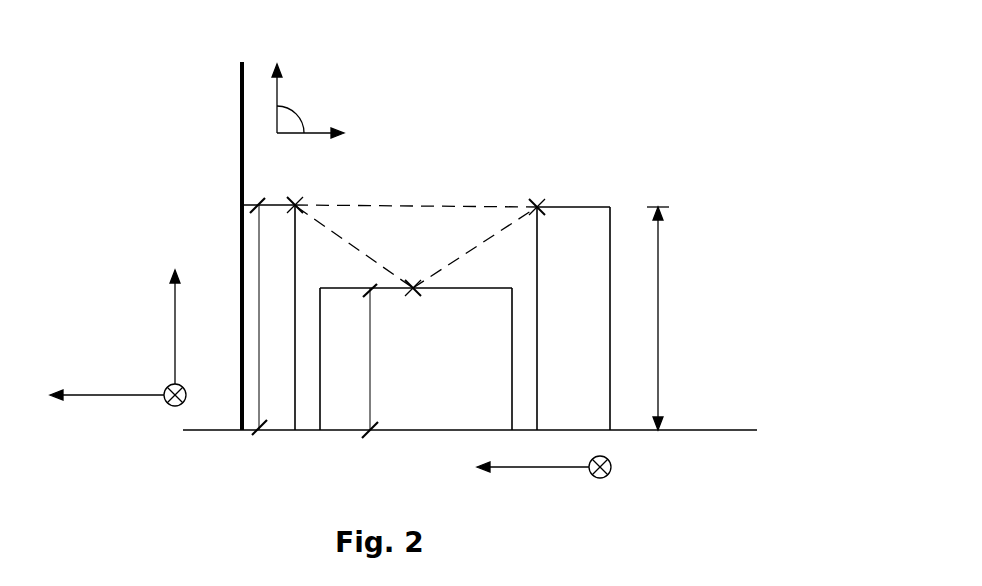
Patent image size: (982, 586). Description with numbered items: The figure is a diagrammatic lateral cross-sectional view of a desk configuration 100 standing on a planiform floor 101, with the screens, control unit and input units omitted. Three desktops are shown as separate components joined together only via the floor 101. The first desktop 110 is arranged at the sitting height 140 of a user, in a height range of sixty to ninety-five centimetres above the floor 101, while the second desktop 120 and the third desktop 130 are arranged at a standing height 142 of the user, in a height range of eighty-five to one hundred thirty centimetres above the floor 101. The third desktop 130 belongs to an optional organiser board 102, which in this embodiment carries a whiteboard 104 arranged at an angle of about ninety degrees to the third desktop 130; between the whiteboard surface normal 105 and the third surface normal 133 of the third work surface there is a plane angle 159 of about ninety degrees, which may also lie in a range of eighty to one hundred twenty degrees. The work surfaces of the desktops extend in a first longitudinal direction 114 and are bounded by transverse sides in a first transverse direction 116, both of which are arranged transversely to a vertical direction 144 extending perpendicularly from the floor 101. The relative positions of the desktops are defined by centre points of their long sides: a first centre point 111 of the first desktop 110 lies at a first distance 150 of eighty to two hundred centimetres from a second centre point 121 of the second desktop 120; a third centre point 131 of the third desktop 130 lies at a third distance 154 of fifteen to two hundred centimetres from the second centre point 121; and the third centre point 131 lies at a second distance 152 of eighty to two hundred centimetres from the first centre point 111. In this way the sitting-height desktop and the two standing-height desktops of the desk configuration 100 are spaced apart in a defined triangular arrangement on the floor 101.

The desk configuration 100 is at (436, 102).
The floor 101 is at (220, 424).
The organiser board 102 is at (234, 198).
The whiteboard 104 is at (238, 87).
The whiteboard surface normal 105 is at (320, 132).
The first desktop 110 is at (482, 291).
The first centre point 111 is at (411, 292).
The first longitudinal direction 114 is at (105, 396).
The first transverse direction 116 is at (160, 387).
The second desktop 120 is at (582, 204).
The second centre point 121 is at (538, 210).
The third desktop 130 is at (277, 195).
The third centre point 131 is at (293, 212).
The third surface normal 133 is at (278, 97).
The sitting height 140 is at (368, 397).
The standing height 142 is at (660, 313).
The vertical direction 144 is at (173, 297).
The first distance 150 is at (480, 243).
The second distance 152 is at (353, 243).
The third distance 154 is at (420, 206).
The plane angle 159 is at (292, 118).